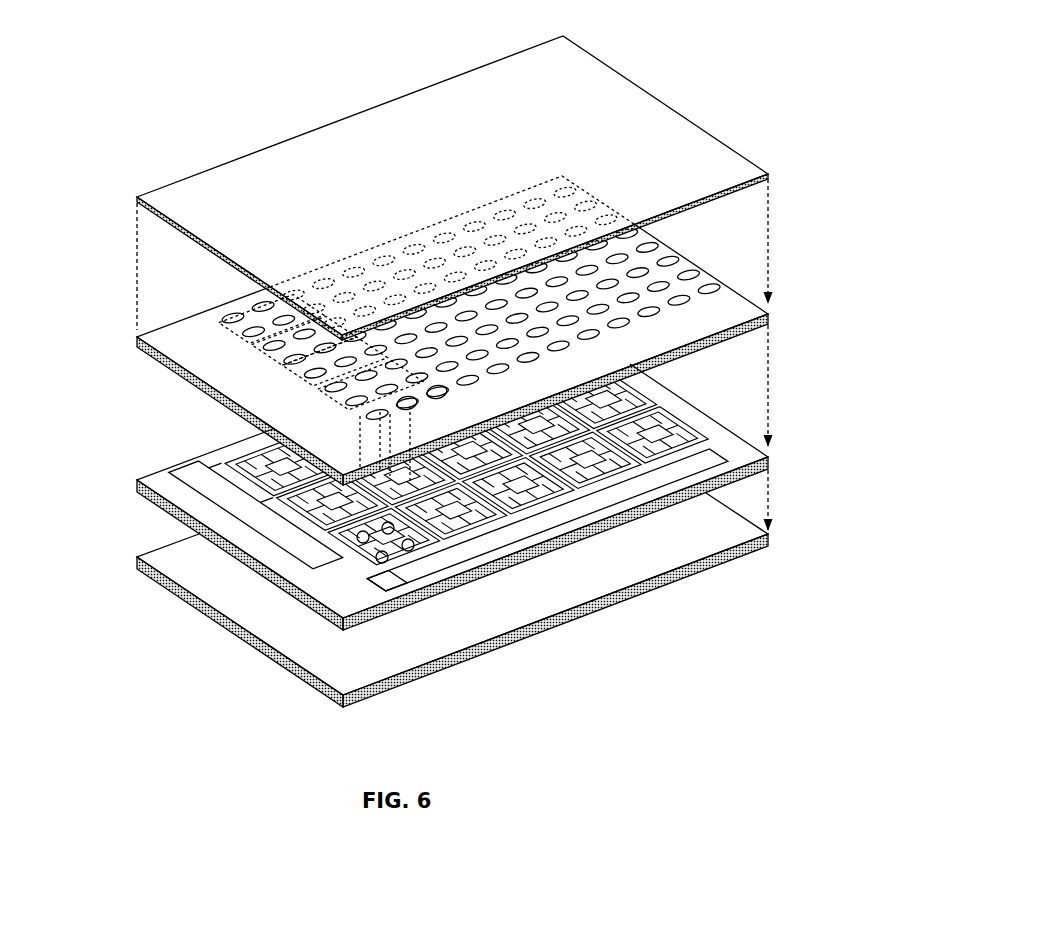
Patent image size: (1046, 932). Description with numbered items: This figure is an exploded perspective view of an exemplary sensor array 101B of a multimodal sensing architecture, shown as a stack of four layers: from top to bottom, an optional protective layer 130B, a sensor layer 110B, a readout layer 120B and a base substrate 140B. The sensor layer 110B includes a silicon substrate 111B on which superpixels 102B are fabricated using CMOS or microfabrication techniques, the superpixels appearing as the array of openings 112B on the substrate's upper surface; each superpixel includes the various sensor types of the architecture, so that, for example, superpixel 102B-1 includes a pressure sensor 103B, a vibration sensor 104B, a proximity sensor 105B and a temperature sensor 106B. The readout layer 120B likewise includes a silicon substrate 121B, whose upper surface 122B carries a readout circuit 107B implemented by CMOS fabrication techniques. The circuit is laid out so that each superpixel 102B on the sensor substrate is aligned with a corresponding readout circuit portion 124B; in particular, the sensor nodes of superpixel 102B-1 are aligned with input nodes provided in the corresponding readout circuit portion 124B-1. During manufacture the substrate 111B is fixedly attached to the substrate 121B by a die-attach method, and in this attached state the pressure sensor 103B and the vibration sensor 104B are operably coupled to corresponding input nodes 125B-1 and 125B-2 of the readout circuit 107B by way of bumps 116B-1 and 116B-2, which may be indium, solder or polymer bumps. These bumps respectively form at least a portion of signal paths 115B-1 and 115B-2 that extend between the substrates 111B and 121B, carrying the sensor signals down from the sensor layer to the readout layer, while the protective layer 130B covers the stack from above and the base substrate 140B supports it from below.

The sensor array 101B is at (231, 62).
The protective layer 130B is at (748, 150).
The sensor layer 110B is at (450, 330).
The silicon substrate 111B is at (772, 322).
The openings in electrode layer 112B is at (724, 299).
The superpixel 102B is at (326, 400).
The superpixel 102B-1 is at (336, 399).
The pressure sensor 103B is at (360, 413).
The vibration sensor 104B is at (386, 426).
The proximity sensor 105B is at (446, 394).
The temperature sensor 106B is at (415, 407).
The readout layer 120B is at (446, 525).
The silicon substrate 121B is at (772, 465).
The top surface of substrate layer 122B is at (741, 447).
The readout circuit portion 124B is at (484, 536).
The readout circuit portion 124B-1 is at (432, 556).
The input node 125B-1 is at (360, 543).
The input node 125B-2 is at (386, 563).
The signal path 115B-1 is at (362, 448).
The signal path 115B-2 is at (350, 478).
The bump 116B-1 is at (340, 559).
The bump 116B-2 is at (372, 582).
The readout circuit 107B is at (622, 494).
The base substrate 140B is at (775, 536).